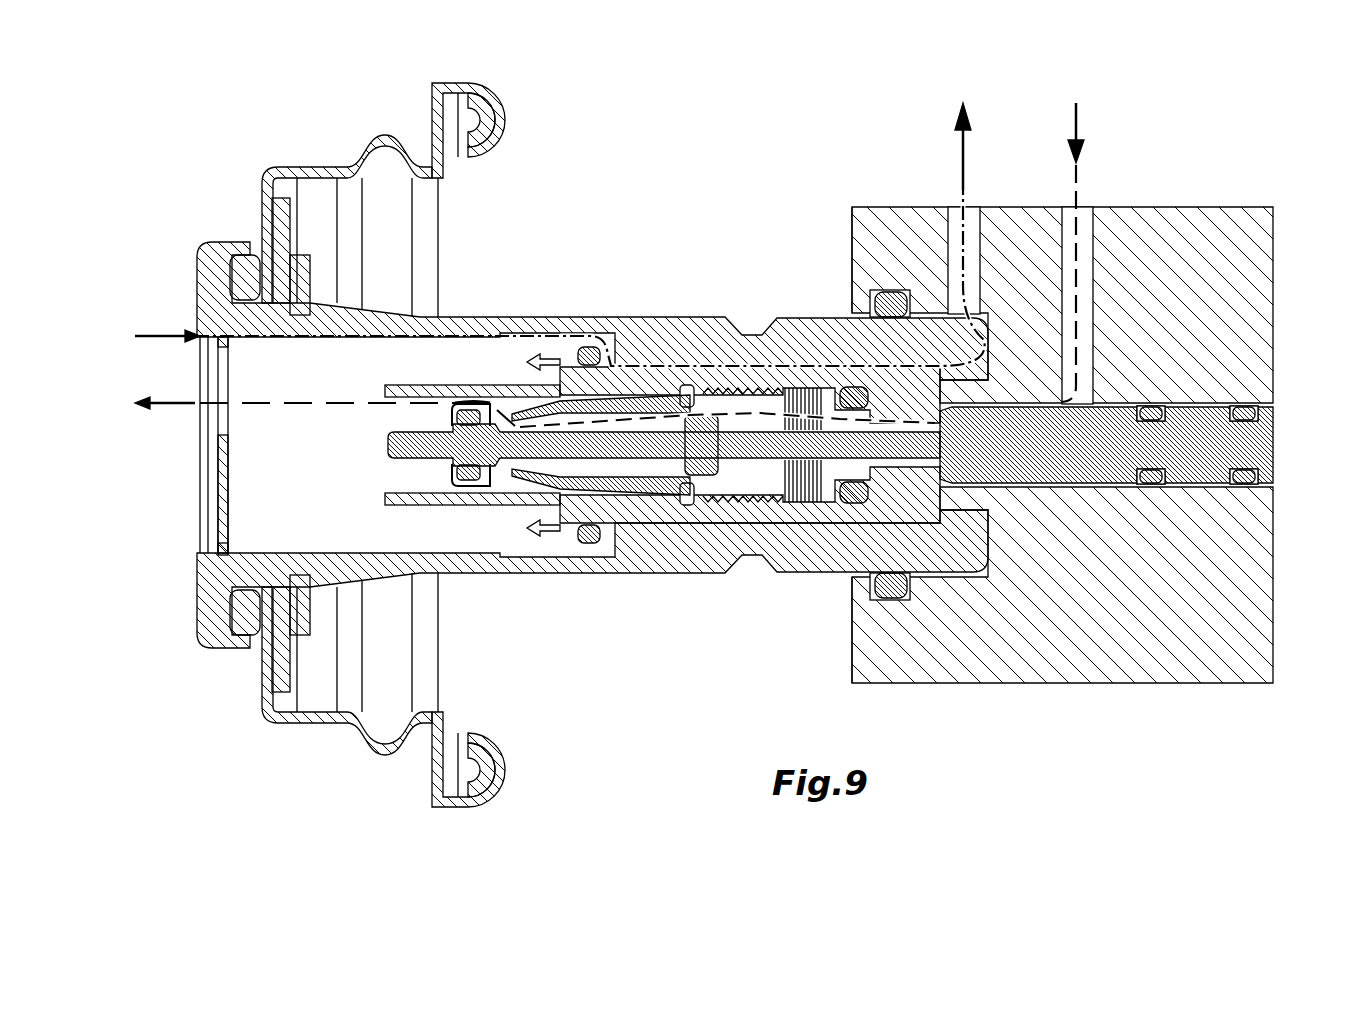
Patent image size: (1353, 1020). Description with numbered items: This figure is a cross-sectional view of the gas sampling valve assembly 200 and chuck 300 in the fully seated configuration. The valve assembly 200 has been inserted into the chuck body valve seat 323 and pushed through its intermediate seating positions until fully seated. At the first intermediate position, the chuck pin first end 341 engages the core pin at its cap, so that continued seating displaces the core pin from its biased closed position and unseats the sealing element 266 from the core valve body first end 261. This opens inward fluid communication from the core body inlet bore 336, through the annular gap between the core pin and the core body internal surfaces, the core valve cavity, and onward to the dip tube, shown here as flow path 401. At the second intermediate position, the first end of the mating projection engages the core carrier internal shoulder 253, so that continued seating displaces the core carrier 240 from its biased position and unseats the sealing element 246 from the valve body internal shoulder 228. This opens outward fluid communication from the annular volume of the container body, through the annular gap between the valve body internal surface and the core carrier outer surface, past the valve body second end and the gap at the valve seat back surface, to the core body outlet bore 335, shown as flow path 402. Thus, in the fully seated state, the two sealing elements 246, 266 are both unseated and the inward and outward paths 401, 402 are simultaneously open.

The valve assembly 200 is at (592, 309).
The valve body internal shoulder 228 is at (633, 342).
The core carrier 240 is at (668, 378).
The sealing element 246 is at (577, 343).
The core carrier internal shoulder 253 is at (818, 385).
The core valve body first end 261 is at (470, 486).
The sealing element 266 is at (506, 476).
The chuck 300 is at (1158, 203).
The chuck body valve seat 323 is at (838, 583).
The core body outlet bore 335 is at (973, 212).
The core body inlet bore 336 is at (1085, 213).
The chuck pin first end 341 is at (848, 445).
The flow path 401 is at (1072, 178).
The flow path 402 is at (960, 148).